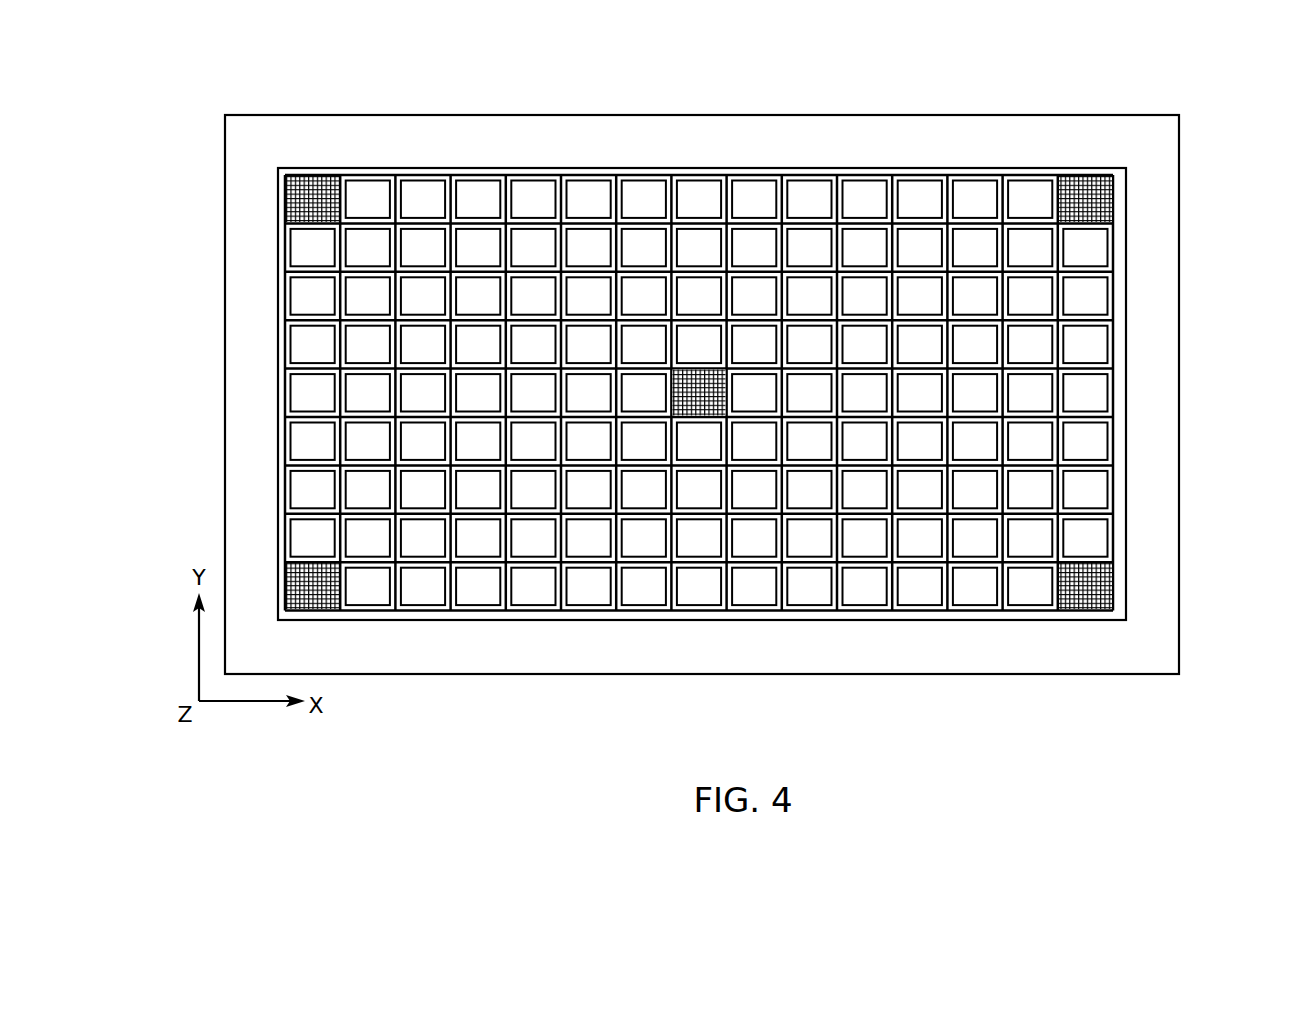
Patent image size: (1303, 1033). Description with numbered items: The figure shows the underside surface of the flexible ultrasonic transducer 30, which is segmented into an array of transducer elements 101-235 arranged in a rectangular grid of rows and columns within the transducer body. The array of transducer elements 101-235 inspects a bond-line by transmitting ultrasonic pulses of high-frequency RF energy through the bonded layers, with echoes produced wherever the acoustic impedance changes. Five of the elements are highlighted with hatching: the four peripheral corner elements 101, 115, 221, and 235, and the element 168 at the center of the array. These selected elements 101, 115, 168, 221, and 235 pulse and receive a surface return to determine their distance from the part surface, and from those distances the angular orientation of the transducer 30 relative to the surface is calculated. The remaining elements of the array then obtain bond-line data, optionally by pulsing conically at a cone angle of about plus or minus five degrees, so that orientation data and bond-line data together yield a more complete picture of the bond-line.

The ultrasonic transducer 30 is at (1143, 327).
The array of transducer elements 101-235 is at (278, 632).
The transducer element 101 is at (302, 202).
The transducer element 115 is at (1098, 200).
The transducer element 221 is at (302, 590).
The transducer element 235 is at (1090, 586).
The transducer element 168 is at (699, 390).